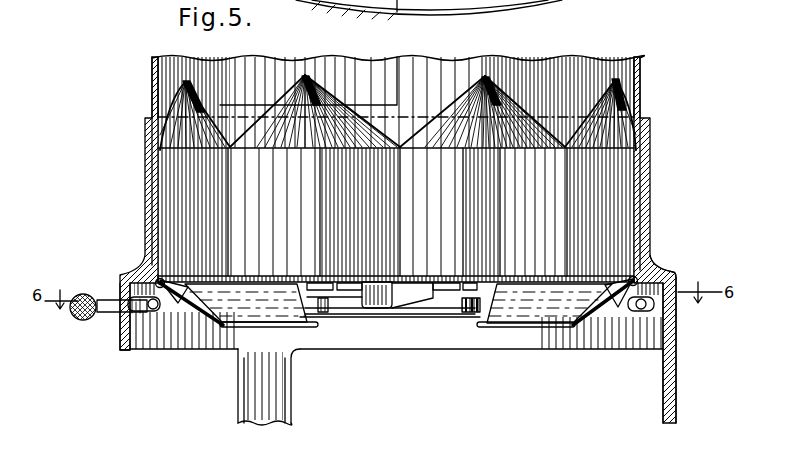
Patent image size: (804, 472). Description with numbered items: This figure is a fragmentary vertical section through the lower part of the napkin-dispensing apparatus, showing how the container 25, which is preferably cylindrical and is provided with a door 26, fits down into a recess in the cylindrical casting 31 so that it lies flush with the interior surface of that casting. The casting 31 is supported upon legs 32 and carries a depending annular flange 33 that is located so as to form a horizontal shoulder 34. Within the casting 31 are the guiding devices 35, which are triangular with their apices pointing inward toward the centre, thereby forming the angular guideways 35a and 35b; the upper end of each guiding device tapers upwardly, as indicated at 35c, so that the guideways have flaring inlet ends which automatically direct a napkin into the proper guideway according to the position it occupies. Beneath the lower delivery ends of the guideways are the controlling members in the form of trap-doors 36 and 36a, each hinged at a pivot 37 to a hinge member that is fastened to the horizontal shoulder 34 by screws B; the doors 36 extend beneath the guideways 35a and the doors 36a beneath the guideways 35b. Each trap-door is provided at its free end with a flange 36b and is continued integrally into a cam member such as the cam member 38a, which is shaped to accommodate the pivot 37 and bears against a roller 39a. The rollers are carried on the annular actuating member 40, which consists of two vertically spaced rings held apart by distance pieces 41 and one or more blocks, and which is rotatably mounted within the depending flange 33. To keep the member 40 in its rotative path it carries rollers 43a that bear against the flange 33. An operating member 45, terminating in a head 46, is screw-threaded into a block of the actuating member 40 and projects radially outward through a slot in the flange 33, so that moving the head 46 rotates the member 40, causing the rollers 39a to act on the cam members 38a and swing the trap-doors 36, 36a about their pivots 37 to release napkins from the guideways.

The container 25 is at (646, 77).
The door 26 is at (322, 62).
The cylindrical casting 31 is at (648, 150).
The legs 32 is at (688, 387).
The depending annular flange 33 is at (127, 352).
The horizontal shoulder 34 is at (660, 268).
The guiding devices 35 is at (623, 200).
The angular guideways 35a is at (187, 192).
The angular guideways 35b is at (274, 212).
The upwardly tapering upper ends 35c is at (481, 76).
The trap-doors 36 is at (583, 308).
The trap-doors 36a is at (590, 277).
The flanges 36b is at (530, 326).
The pivots 37 is at (632, 276).
The cam members 38a is at (625, 303).
The rollers 39a is at (640, 311).
The annular actuating member 40 is at (421, 305).
The distance pieces 41 is at (330, 304).
The rollers 43a is at (468, 316).
The operating member 45 is at (107, 312).
The head 46 is at (78, 318).
The screws B is at (120, 283).